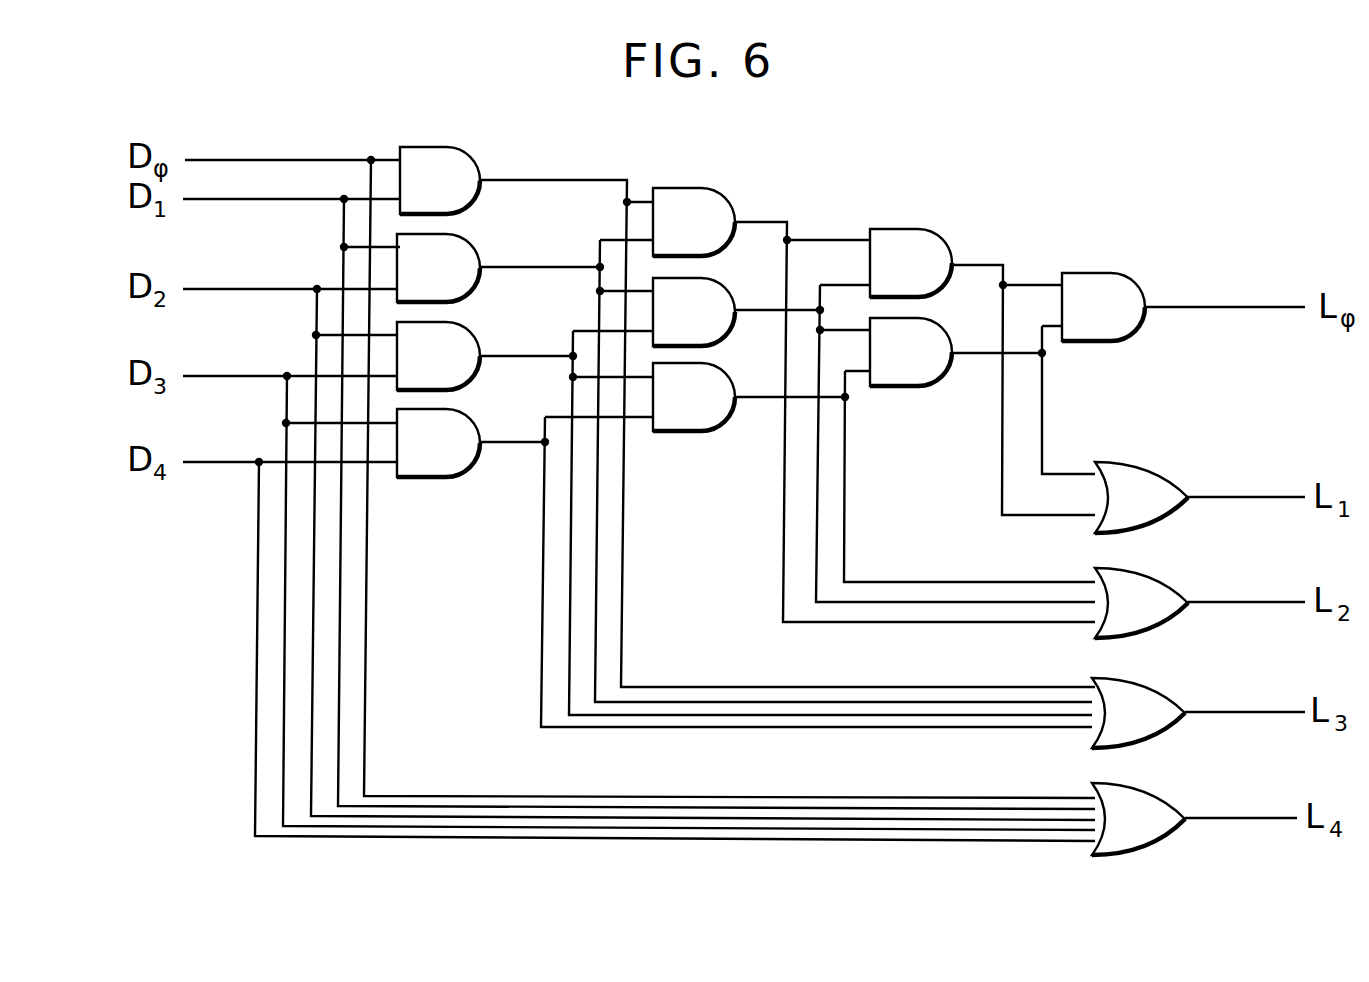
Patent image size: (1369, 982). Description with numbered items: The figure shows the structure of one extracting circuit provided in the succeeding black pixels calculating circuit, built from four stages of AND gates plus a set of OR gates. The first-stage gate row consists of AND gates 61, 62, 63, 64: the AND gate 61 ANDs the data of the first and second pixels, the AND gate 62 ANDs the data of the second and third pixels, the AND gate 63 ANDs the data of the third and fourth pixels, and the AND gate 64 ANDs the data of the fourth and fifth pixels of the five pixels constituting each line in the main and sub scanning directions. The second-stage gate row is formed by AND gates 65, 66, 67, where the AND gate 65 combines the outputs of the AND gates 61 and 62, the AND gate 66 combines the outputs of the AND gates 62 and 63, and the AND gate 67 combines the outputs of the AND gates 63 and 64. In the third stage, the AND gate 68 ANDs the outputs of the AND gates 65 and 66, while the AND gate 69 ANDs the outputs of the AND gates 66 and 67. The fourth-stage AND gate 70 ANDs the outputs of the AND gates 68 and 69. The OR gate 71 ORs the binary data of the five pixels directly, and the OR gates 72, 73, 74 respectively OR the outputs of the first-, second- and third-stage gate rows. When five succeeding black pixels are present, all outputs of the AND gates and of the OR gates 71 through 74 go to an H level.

The AND gate 61 is at (470, 152).
The AND gate 62 is at (473, 255).
The AND gate 63 is at (473, 335).
The AND gate 64 is at (473, 423).
The AND gate 65 is at (732, 203).
The AND gate 66 is at (733, 295).
The AND gate 67 is at (733, 380).
The AND gate 68 is at (950, 242).
The AND gate 69 is at (948, 338).
The AND gate 70 is at (1127, 273).
The OR gate 71 is at (1170, 797).
The OR gate 72 is at (1167, 690).
The OR gate 73 is at (1170, 577).
The OR gate 74 is at (1153, 462).